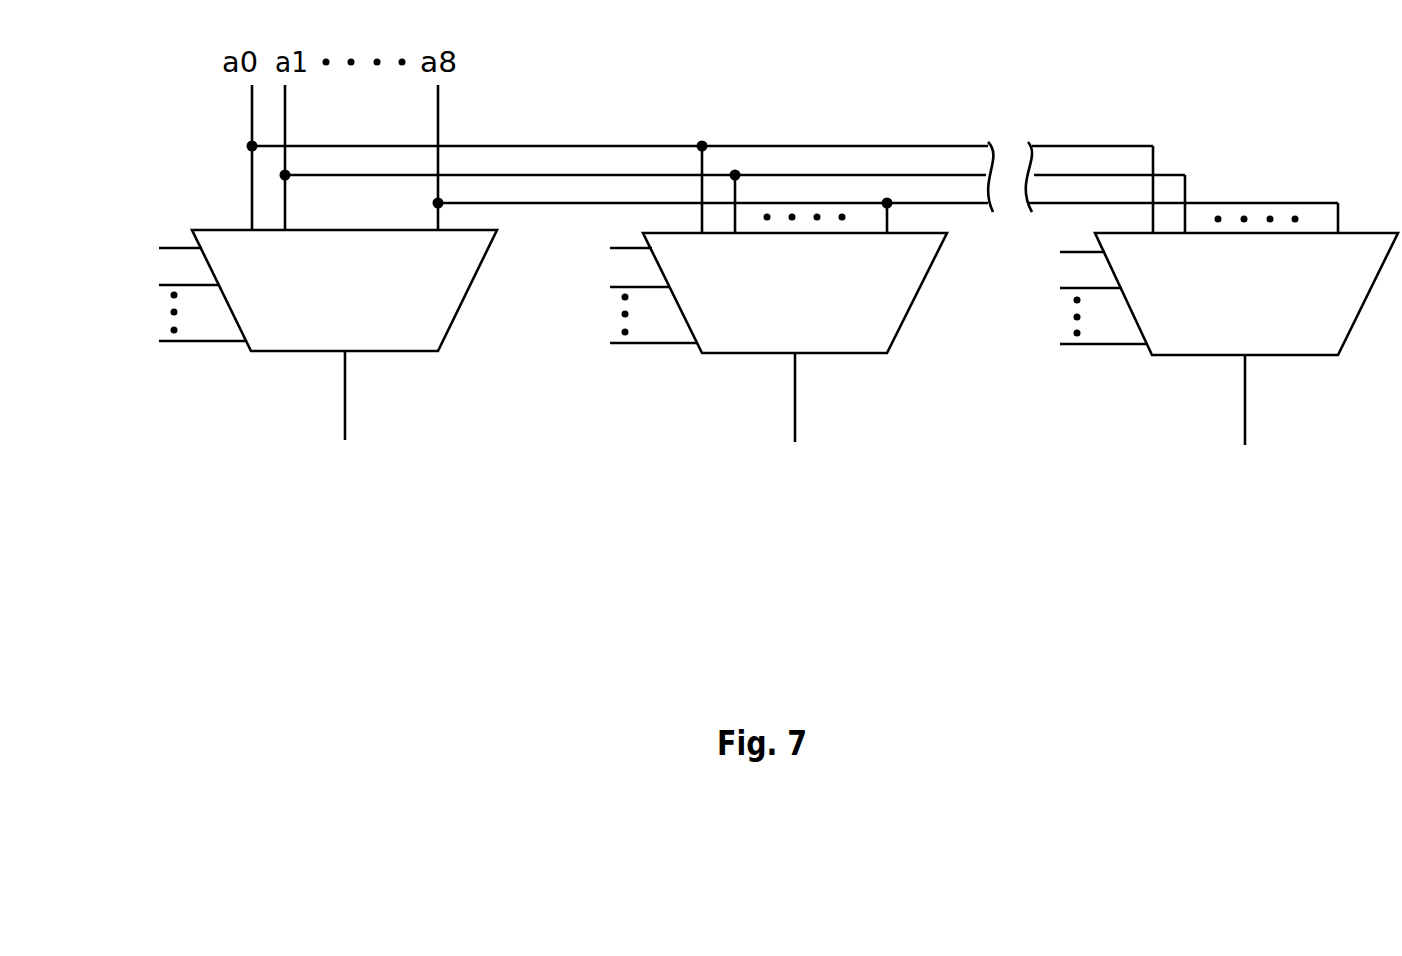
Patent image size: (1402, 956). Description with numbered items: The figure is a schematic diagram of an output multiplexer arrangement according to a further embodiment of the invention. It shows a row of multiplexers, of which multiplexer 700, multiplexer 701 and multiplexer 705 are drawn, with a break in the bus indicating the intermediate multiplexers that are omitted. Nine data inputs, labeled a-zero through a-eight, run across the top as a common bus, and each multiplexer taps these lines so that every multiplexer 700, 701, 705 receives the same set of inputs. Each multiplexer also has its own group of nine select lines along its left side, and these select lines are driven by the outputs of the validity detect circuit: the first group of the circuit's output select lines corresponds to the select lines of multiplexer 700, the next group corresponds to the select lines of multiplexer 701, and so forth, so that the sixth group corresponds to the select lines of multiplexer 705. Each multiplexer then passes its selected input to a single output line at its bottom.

The multiplexer 700 is at (392, 340).
The multiplexer 701 is at (840, 340).
The multiplexer 705 is at (1293, 342).